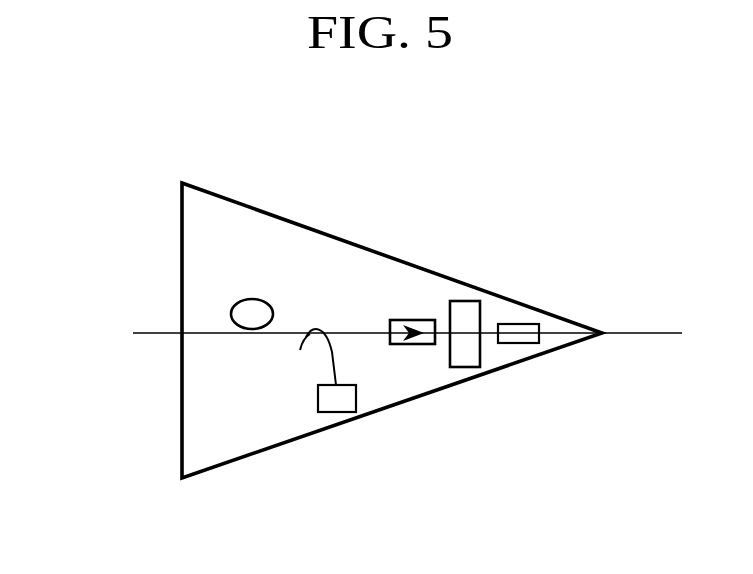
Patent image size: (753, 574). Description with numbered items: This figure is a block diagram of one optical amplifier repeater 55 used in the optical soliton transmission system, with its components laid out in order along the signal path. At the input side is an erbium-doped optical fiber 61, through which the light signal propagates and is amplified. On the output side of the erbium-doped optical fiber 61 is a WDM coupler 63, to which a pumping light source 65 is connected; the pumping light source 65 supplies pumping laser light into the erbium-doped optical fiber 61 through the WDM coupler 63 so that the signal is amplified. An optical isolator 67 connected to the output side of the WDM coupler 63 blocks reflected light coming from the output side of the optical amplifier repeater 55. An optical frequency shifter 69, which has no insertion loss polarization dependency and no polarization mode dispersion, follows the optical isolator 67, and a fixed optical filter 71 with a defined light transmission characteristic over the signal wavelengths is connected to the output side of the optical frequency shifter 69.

The optical amplifier repeater 55 is at (255, 206).
The erbium-doped optical fiber 61 is at (240, 302).
The WDM coupler 63 is at (302, 343).
The pumping light source 65 is at (335, 412).
The optical isolator 67 is at (414, 344).
The optical frequency shifter 69 is at (481, 348).
The fixed optical filter 71 is at (512, 324).